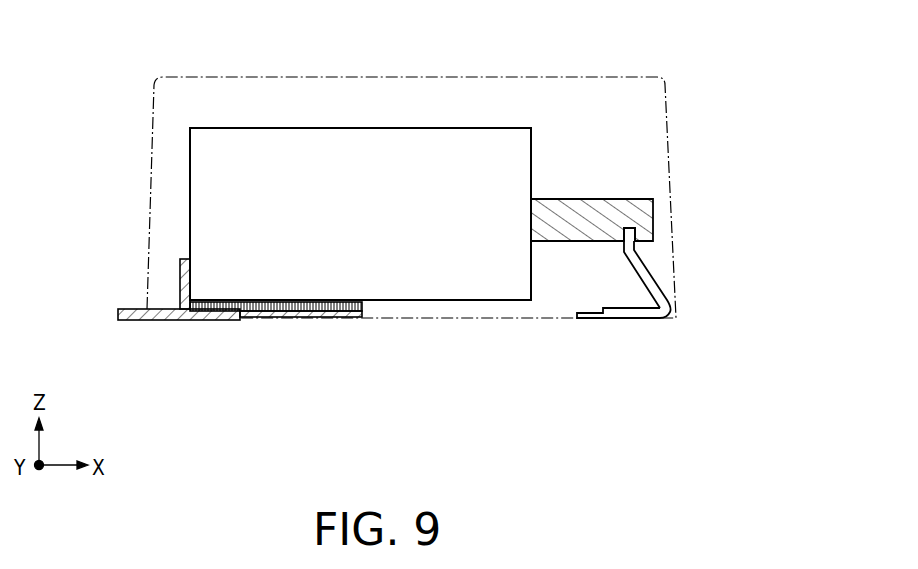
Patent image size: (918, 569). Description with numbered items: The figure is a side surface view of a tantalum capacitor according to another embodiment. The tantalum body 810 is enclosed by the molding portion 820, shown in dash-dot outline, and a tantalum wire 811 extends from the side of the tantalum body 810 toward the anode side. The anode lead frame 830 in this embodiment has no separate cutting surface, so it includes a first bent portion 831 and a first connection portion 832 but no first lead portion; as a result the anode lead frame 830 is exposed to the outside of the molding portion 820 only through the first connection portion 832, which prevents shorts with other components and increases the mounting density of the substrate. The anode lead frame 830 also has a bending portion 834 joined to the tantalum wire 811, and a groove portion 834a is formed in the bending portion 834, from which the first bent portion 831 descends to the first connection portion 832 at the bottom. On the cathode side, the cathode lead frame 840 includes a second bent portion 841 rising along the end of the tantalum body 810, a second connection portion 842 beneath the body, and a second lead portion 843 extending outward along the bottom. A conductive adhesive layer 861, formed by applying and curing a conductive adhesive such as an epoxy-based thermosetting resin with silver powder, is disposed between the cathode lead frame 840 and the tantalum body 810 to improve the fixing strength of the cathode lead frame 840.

The tantalum body 810 is at (295, 128).
The tantalum wire 811 is at (632, 206).
The molding portion 820 is at (415, 77).
The anode lead frame 830 is at (637, 333).
The first bent portion 831 is at (645, 270).
The first connection portion 832 is at (651, 316).
The bending portion 834 is at (654, 228).
The groove portion 834a is at (637, 235).
The cathode lead frame 840 is at (205, 334).
The second bent portion 841 is at (182, 291).
The second connection portion 842 is at (226, 319).
The second lead portion 843 is at (153, 320).
The conductive adhesive layer 861 is at (310, 313).